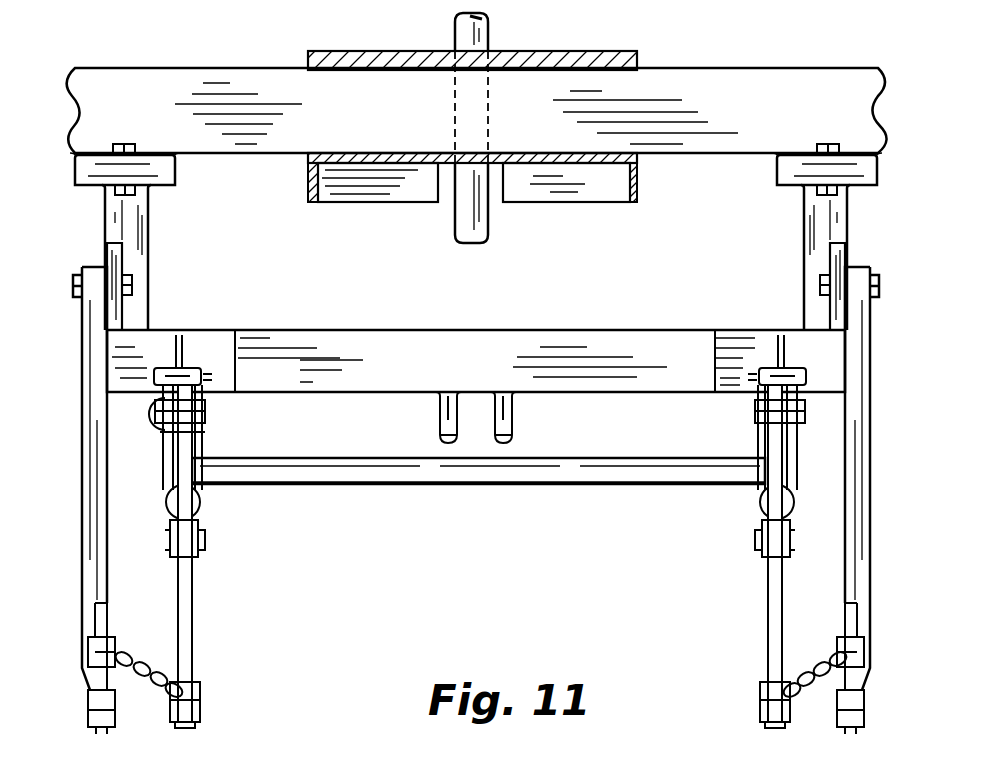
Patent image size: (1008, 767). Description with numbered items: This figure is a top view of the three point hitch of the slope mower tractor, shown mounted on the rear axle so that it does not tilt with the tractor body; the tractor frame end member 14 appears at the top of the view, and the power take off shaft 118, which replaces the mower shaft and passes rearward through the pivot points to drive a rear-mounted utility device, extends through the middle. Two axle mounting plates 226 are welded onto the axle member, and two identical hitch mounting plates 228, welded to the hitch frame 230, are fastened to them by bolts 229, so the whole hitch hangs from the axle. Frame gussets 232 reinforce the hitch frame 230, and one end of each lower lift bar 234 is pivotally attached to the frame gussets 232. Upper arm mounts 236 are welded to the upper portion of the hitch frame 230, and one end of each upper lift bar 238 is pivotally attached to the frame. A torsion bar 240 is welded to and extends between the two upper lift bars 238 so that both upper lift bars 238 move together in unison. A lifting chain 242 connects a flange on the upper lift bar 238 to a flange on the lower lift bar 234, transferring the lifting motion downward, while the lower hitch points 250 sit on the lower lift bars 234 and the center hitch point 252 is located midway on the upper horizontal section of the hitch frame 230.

The end member 14 is at (578, 166).
The power take off shaft 118 is at (489, 33).
The axle mounting plate 226 is at (792, 157).
The hitch mounting plate 228 is at (781, 172).
The bolt 229 is at (132, 197).
The hitch frame 230 is at (806, 233).
The frame gusset 232 is at (121, 324).
The lower lift bar 234 is at (108, 530).
The upper arm mount 236 is at (198, 438).
The upper lift bar 238 is at (196, 607).
The torsion bar 240 is at (500, 488).
The lifting chain 242 is at (155, 690).
The lower hitch point 250 is at (200, 700).
The center hitch point 252 is at (440, 420).